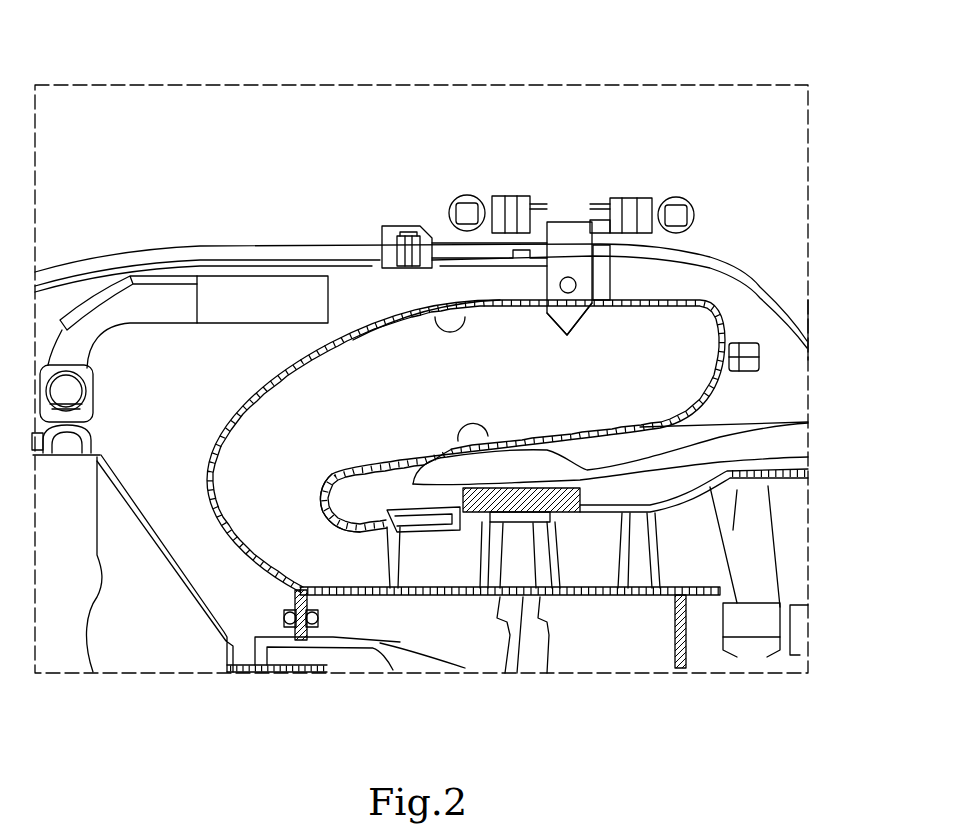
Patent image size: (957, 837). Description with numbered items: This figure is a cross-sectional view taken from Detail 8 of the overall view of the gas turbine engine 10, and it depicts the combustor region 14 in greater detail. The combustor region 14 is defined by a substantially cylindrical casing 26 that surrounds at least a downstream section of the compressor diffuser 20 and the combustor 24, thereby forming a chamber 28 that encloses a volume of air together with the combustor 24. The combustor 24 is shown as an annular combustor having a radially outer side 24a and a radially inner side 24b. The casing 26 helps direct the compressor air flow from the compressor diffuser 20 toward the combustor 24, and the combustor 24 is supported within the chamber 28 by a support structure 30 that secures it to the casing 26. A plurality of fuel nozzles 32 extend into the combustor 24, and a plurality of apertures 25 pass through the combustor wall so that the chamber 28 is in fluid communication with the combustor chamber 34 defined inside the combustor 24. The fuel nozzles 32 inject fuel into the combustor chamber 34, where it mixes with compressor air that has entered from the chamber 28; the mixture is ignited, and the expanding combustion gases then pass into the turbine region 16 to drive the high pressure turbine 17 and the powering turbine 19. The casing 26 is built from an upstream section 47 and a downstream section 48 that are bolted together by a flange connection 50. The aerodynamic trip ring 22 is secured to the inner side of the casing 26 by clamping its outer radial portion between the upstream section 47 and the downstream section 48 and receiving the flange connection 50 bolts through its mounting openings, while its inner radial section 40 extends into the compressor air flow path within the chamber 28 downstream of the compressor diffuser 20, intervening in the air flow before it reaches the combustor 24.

The detail 8 is at (419, 84).
The gas turbine engine 10 is at (810, 175).
The combustor region 14 is at (541, 260).
The turbine region 16 is at (535, 575).
The high pressure turbine 17 is at (523, 600).
The powering turbine 19 is at (757, 600).
The compressor diffuser 20 is at (209, 290).
The aerodynamic trip ring 22 is at (394, 281).
The combustor 24 is at (421, 261).
The radially outer side 24a is at (404, 314).
The radially inner side 24b is at (399, 476).
The apertures 25 is at (468, 428).
The casing 26 is at (332, 245).
The chamber 28 is at (163, 388).
The support structure 30 is at (567, 215).
The fuel nozzles 32 is at (567, 336).
The combustor chamber 34 is at (330, 435).
The inner radial section 40 is at (489, 268).
The upstream section 47 is at (262, 245).
The downstream section 48 is at (722, 244).
The flange connection 50 is at (407, 230).